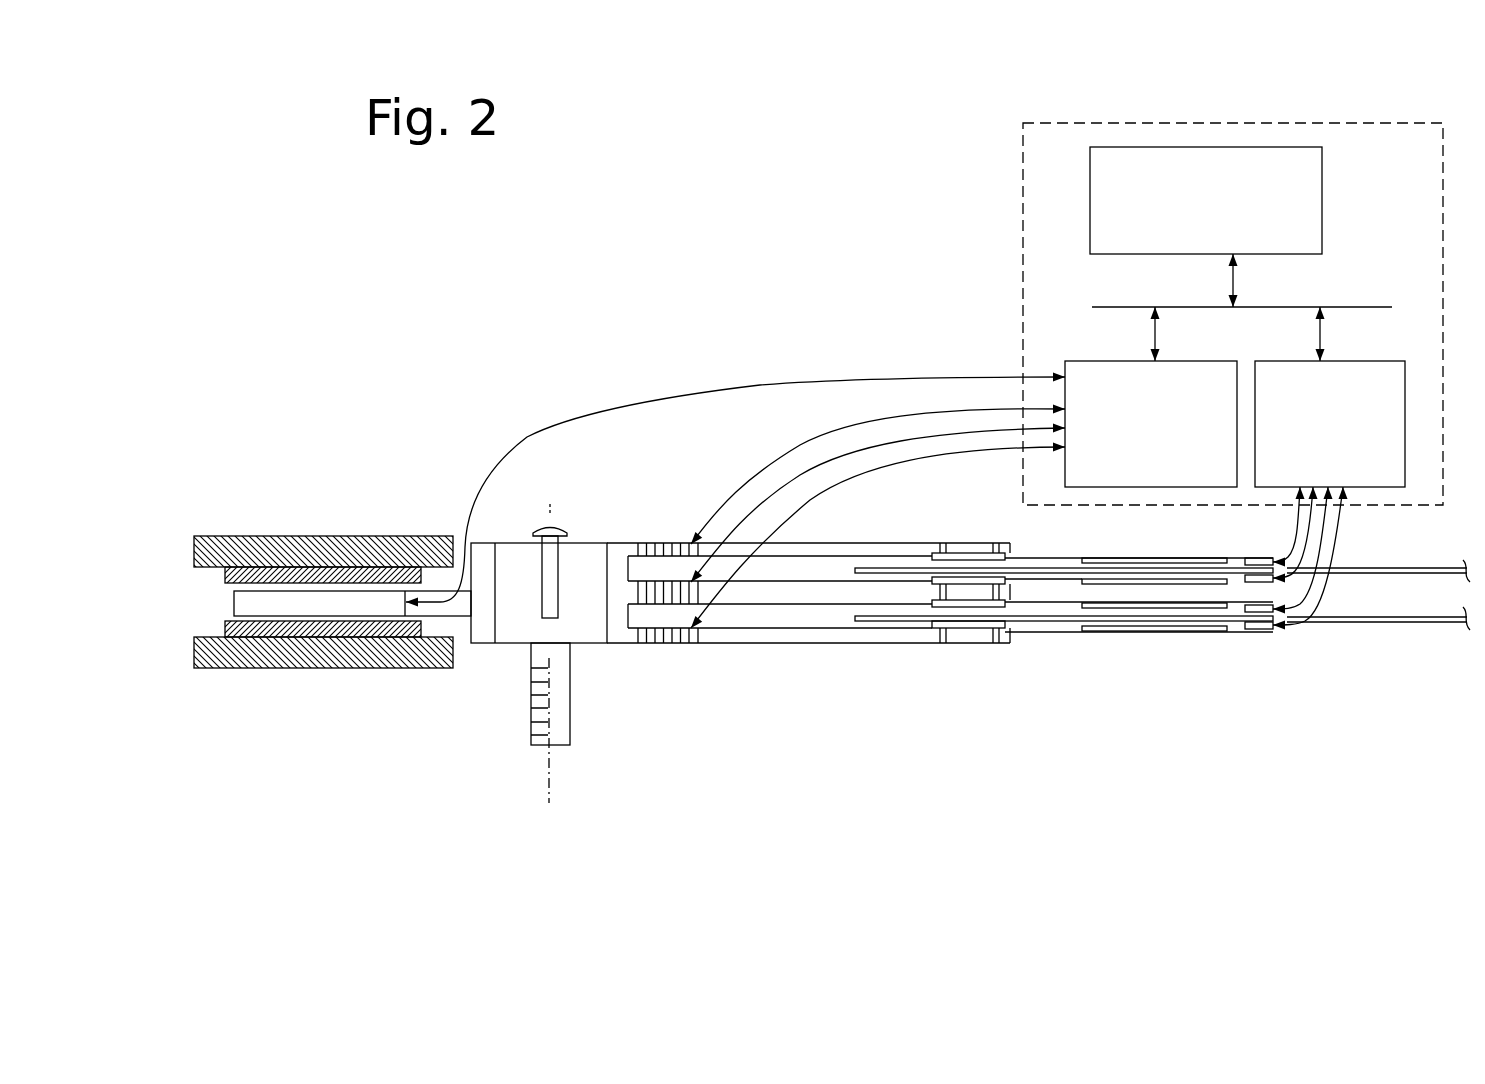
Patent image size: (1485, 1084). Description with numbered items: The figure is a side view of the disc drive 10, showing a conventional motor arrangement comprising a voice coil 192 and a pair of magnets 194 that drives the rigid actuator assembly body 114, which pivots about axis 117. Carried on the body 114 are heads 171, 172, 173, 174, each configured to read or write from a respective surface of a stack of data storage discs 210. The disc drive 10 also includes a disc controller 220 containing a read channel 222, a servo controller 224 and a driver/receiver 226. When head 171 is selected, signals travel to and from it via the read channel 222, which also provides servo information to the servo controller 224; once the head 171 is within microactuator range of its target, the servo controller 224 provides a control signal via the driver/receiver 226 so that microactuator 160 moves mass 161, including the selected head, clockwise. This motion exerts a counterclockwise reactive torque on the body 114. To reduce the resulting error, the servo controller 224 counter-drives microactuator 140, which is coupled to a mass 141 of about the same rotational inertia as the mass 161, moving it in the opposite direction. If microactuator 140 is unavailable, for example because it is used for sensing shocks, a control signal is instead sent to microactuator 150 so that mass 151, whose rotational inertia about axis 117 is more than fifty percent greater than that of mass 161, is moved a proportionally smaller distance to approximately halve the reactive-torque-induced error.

The disc drive 10 is at (867, 155).
The actuator assembly body 114 is at (583, 557).
The axis 117 is at (549, 779).
The microactuator 140 is at (673, 643).
The mass 141 is at (817, 635).
The microactuator 150 is at (630, 614).
The mass 151 is at (762, 592).
The microactuator 160 is at (657, 543).
The mass 161 is at (849, 548).
The transducer head 171 is at (1236, 560).
The head 172 is at (1241, 579).
The head 173 is at (1240, 611).
The head 174 is at (1241, 627).
The voice coil 192 is at (248, 603).
The magnets 194 is at (225, 578).
The data storage discs 210 is at (1350, 569).
The disc controller 220 is at (1023, 260).
The read channel 222 is at (1386, 471).
The servo controller 224 is at (1166, 236).
The driver/receiver 226 is at (1201, 471).